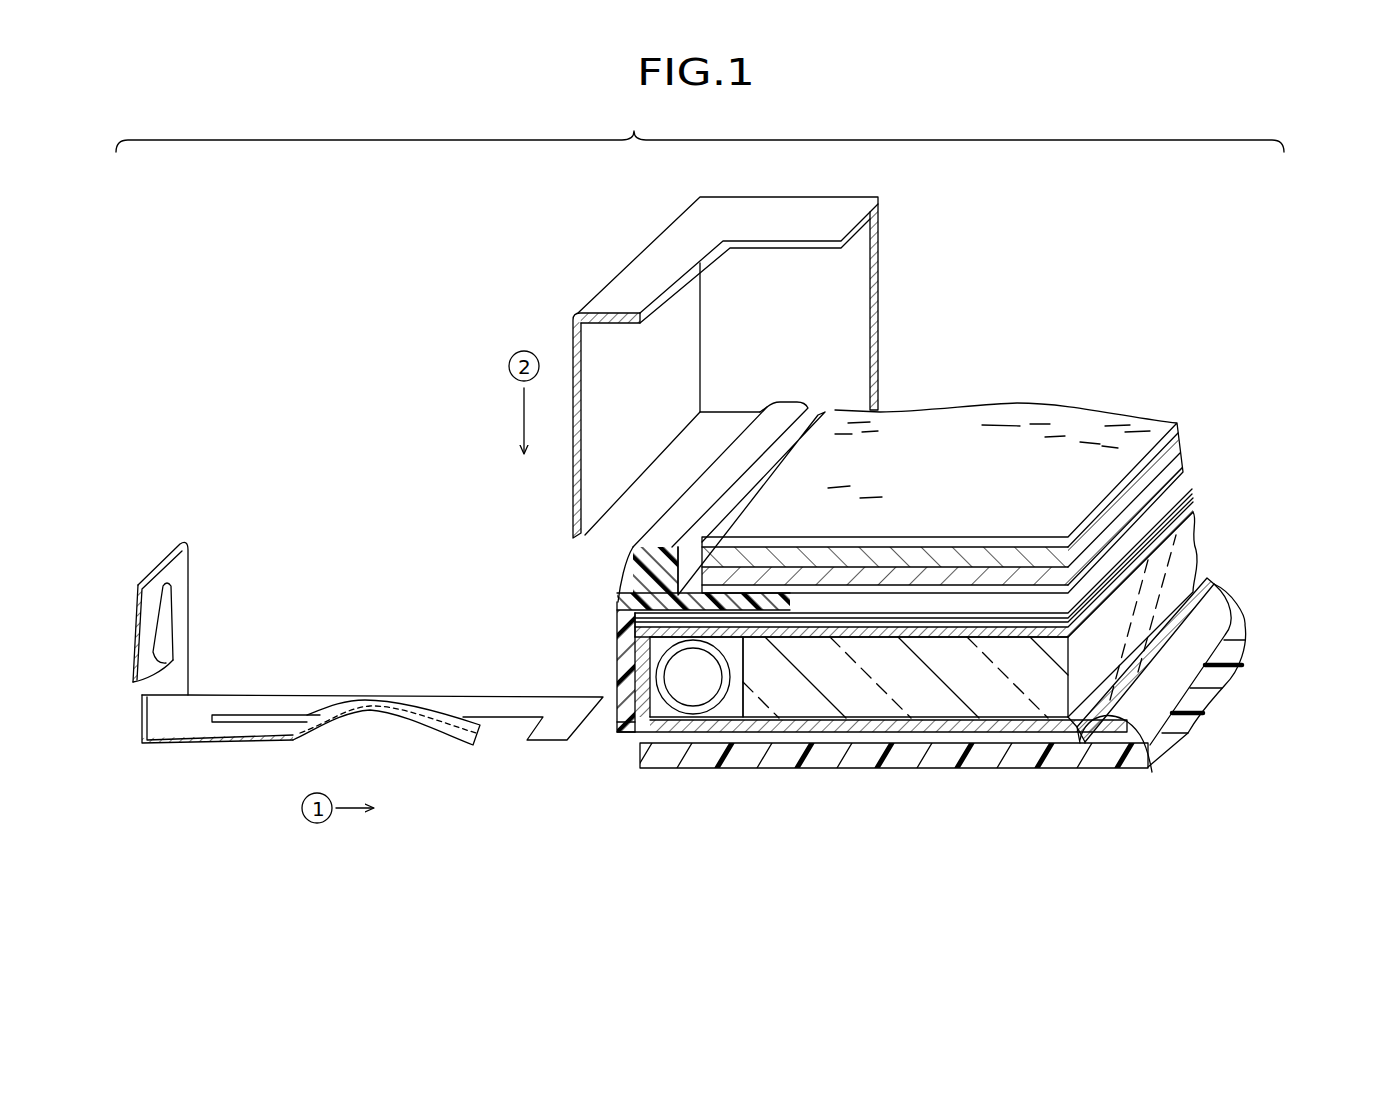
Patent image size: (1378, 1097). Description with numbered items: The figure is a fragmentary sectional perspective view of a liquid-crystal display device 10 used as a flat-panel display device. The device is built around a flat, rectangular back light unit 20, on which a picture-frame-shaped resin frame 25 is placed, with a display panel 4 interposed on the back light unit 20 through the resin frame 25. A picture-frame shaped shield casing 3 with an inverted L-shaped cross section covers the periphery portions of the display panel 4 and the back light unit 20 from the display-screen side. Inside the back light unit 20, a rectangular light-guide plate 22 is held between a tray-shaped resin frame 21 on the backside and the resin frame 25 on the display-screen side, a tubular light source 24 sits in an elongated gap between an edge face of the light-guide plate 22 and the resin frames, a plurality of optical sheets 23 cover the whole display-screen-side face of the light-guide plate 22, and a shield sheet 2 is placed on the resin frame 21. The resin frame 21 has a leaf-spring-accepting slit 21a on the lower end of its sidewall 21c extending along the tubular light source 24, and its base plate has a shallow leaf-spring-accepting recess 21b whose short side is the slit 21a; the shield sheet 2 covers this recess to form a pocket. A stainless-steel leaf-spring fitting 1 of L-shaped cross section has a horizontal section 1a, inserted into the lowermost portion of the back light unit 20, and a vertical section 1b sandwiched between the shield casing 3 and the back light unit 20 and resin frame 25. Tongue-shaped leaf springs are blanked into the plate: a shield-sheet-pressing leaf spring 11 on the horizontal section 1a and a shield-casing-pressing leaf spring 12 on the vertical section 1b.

The liquid-crystal display device 10 is at (342, 269).
The shield casing 3 is at (608, 303).
The back light unit 20 is at (1246, 496).
The display panel 4 is at (1197, 428).
The optical sheets 23 is at (1195, 484).
The light-guide plate 22 is at (1190, 545).
The shield sheet 2 is at (1207, 585).
The resin frame 25 is at (622, 638).
The resin frame 21 is at (907, 753).
The leaf-spring-accepting slit 21a is at (622, 727).
The leaf-spring-accepting recess 21b is at (1194, 792).
The sidewall 21c is at (633, 738).
The tubular light source 24 is at (693, 708).
The leaf-spring fitting 1 is at (184, 528).
The horizontal section 1a is at (463, 704).
The vertical section 1b is at (183, 590).
The shield-sheet-pressing leaf spring 11 is at (387, 713).
The shield-casing-pressing leaf spring 12 is at (150, 650).